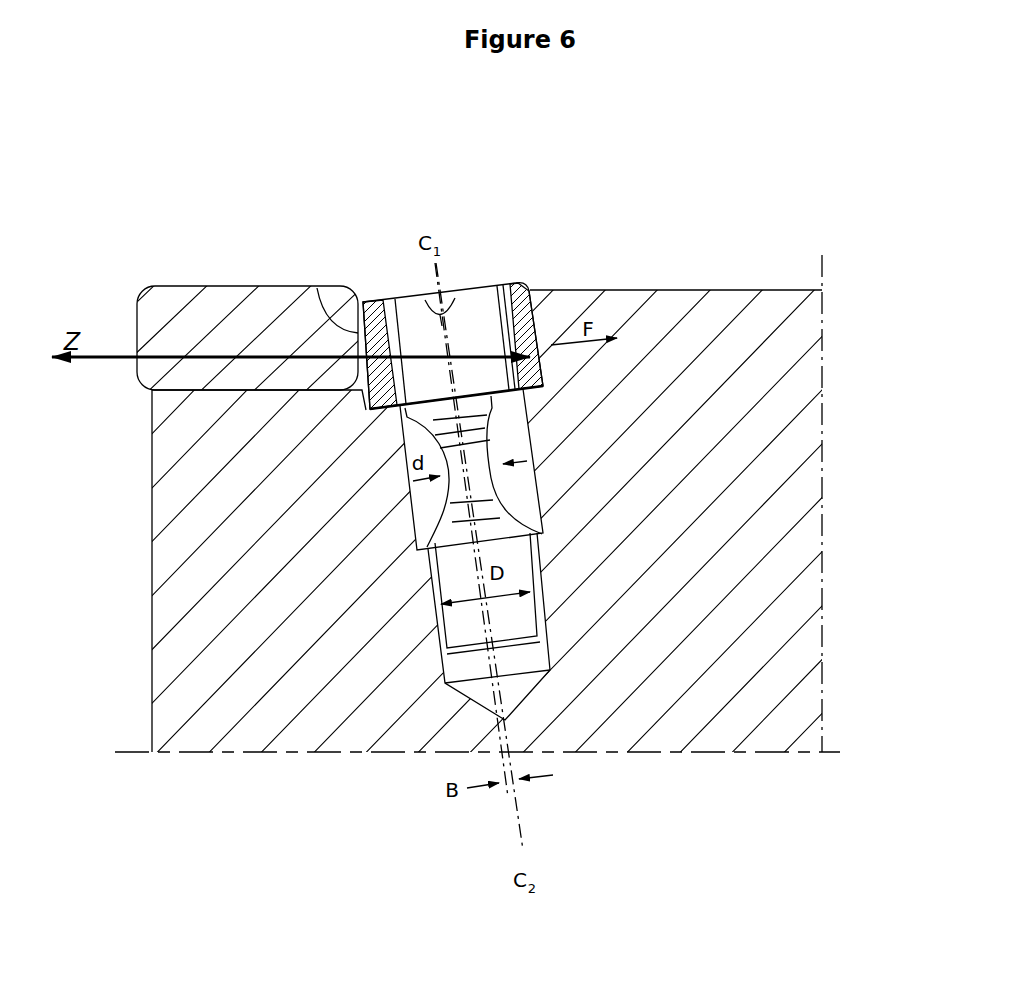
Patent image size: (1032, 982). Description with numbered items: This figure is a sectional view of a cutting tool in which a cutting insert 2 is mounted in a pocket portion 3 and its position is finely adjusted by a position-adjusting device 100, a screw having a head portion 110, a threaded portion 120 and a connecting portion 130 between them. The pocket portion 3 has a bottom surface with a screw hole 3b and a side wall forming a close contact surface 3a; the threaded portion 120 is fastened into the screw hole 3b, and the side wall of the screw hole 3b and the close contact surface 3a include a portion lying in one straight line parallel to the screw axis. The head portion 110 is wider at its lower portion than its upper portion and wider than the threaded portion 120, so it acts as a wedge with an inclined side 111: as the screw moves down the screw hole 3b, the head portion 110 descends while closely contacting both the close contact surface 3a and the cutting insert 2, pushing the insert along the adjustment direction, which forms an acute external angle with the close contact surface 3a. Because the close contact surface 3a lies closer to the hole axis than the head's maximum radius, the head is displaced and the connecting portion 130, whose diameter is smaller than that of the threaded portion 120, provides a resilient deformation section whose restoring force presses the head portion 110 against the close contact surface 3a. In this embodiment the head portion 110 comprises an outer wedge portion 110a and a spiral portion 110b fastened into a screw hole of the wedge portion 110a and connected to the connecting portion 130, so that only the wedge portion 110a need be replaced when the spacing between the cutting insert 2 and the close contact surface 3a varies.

The cutting insert 2 is at (222, 295).
The pocket portion 3 is at (273, 387).
The close contact surface 3a is at (532, 428).
The screw hole 3b is at (540, 565).
The position-adjusting device 100 is at (571, 476).
The head portion 110 is at (571, 276).
The wedge portion 110a is at (511, 285).
The spiral portion 110b is at (535, 320).
The inclined side 111 is at (332, 310).
The threaded portion 120 is at (517, 615).
The connecting portion 130 is at (478, 450).